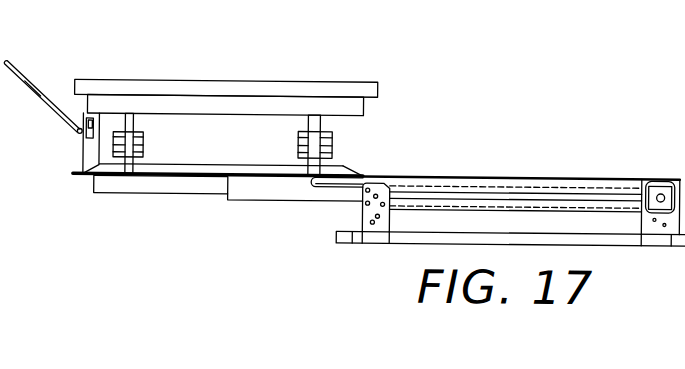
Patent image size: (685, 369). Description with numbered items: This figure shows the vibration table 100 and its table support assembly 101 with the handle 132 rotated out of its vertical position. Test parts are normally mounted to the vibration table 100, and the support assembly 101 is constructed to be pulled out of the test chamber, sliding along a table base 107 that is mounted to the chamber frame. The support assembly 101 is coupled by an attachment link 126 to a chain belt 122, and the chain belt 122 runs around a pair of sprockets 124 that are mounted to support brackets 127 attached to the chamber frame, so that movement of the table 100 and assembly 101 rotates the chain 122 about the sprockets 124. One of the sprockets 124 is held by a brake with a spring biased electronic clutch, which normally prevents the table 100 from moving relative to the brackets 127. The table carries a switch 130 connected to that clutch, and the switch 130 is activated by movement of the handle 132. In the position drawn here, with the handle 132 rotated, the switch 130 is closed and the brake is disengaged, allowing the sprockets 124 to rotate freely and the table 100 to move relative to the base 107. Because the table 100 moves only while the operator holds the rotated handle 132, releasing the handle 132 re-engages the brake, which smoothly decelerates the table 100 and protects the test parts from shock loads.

The vibration table 100 is at (348, 86).
The table support assembly 101 is at (200, 166).
The table base 107 is at (611, 242).
The chain belt 122 is at (452, 184).
The sprockets 124 is at (642, 189).
The attachment link 126 is at (351, 188).
The support brackets 127 is at (15, 221).
The switch 130 is at (94, 122).
The handle 132 is at (18, 68).